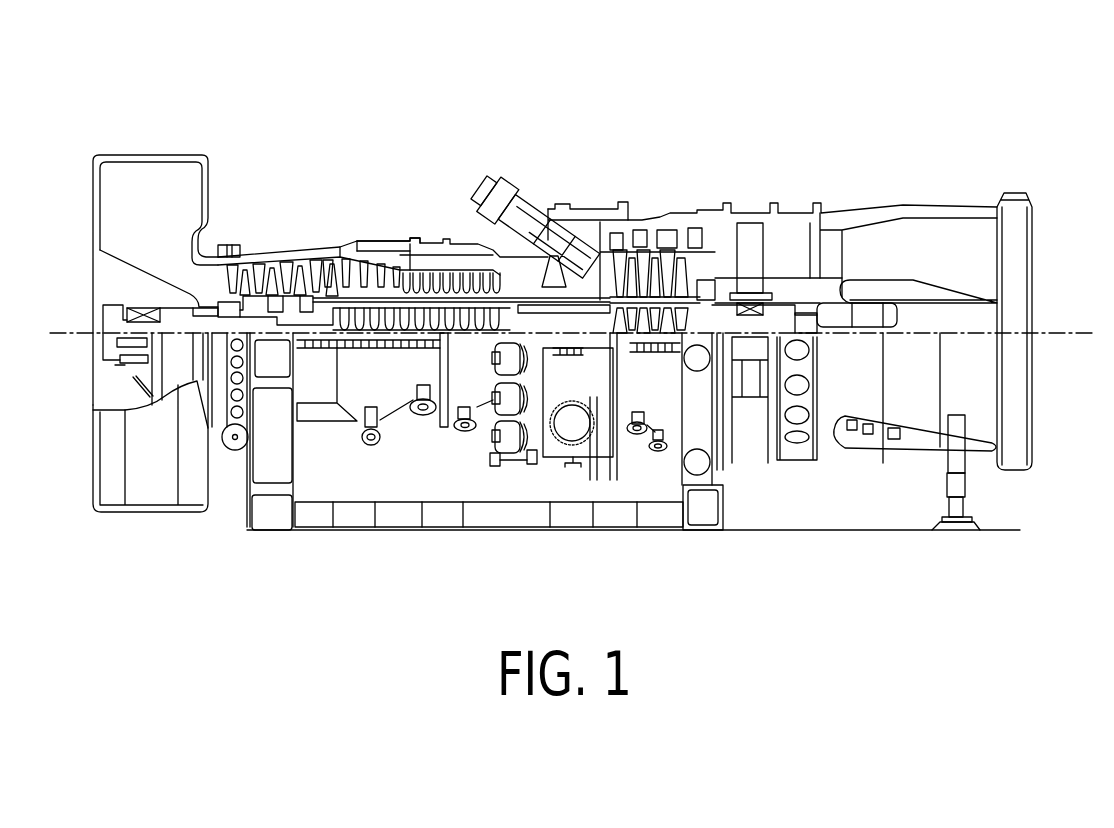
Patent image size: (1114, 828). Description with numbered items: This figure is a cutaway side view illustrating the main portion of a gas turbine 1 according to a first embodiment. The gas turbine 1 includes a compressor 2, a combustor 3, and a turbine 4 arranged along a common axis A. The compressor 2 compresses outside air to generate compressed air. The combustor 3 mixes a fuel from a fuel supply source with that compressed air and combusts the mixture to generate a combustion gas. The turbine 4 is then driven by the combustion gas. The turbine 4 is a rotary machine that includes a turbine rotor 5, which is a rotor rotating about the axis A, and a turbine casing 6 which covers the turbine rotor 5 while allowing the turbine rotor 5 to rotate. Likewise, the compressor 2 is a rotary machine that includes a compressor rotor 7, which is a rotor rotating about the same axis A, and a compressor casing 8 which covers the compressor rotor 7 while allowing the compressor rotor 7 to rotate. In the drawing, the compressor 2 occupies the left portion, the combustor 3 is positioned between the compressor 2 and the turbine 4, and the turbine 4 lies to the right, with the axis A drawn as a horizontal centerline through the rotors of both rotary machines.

The gas turbine 1 is at (221, 126).
The compressor 2 is at (326, 440).
The combustor 3 is at (521, 193).
The turbine 4 is at (657, 472).
The turbine rotor 5 is at (677, 317).
The turbine casing 6 is at (713, 207).
The compressor rotor 7 is at (292, 307).
The compressor casing 8 is at (378, 240).
The axis A is at (1060, 336).